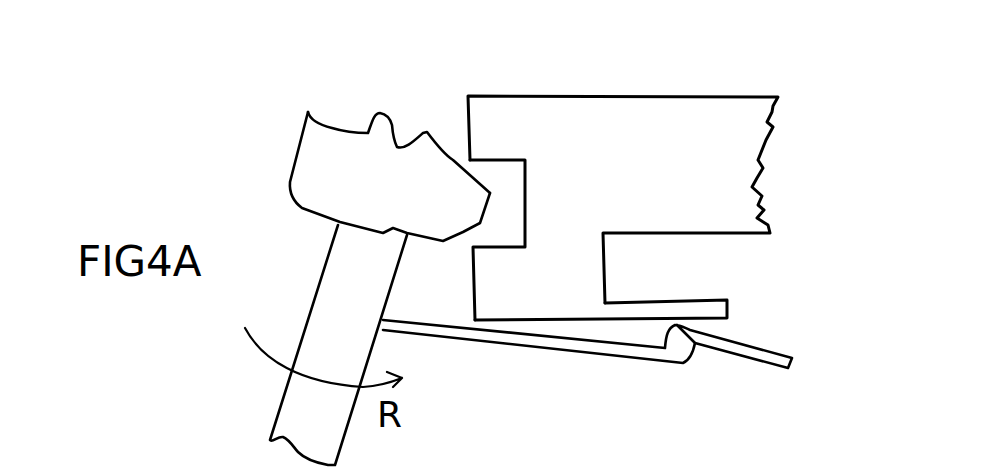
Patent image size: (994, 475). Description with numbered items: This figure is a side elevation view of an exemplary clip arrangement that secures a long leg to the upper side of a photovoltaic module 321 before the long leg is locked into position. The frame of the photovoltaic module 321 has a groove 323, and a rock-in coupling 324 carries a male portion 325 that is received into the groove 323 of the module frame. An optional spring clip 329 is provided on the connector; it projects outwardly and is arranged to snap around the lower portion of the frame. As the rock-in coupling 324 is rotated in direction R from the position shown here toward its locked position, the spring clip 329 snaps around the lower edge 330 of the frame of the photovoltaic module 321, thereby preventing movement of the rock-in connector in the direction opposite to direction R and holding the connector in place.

The photovoltaic module 321 is at (690, 97).
The groove 323 is at (500, 223).
The rock-in coupling 324 is at (365, 183).
The male portion 325 is at (443, 190).
The spring clip 329 is at (653, 363).
The lower edge 330 is at (748, 297).